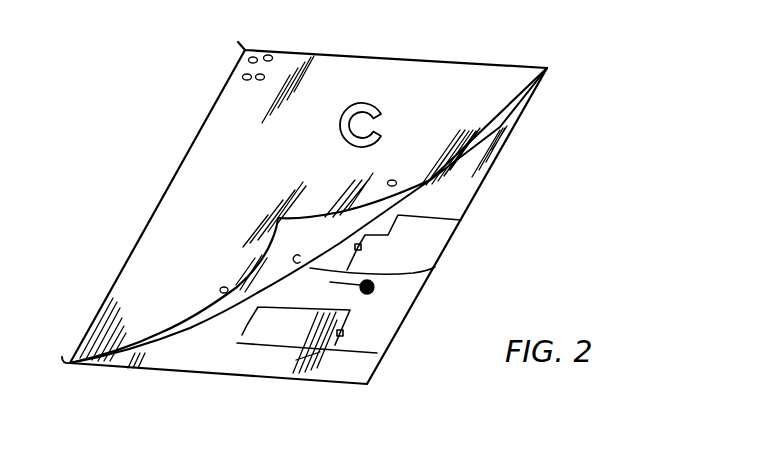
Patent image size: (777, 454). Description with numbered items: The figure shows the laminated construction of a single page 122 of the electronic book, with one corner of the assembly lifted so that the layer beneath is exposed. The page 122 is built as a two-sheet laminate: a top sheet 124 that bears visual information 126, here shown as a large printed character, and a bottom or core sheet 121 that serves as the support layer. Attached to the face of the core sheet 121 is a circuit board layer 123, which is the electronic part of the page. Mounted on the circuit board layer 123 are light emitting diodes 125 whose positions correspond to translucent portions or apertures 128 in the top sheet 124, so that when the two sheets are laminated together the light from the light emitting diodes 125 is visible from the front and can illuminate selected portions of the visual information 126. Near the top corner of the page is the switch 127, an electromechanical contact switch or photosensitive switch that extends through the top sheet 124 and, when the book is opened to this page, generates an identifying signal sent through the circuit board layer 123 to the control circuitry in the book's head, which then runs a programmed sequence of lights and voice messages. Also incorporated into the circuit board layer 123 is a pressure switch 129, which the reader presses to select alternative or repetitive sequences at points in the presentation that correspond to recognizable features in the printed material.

The bottom or core sheet 121 is at (490, 168).
The page 122 is at (193, 210).
The circuit board layer 123 is at (435, 267).
The top sheet 124 is at (262, 252).
The light emitting diodes 125 is at (362, 248).
The visual information 126 is at (383, 105).
The switch 127 is at (250, 82).
The apertures 128 is at (222, 287).
The pressure switches 129 is at (369, 293).